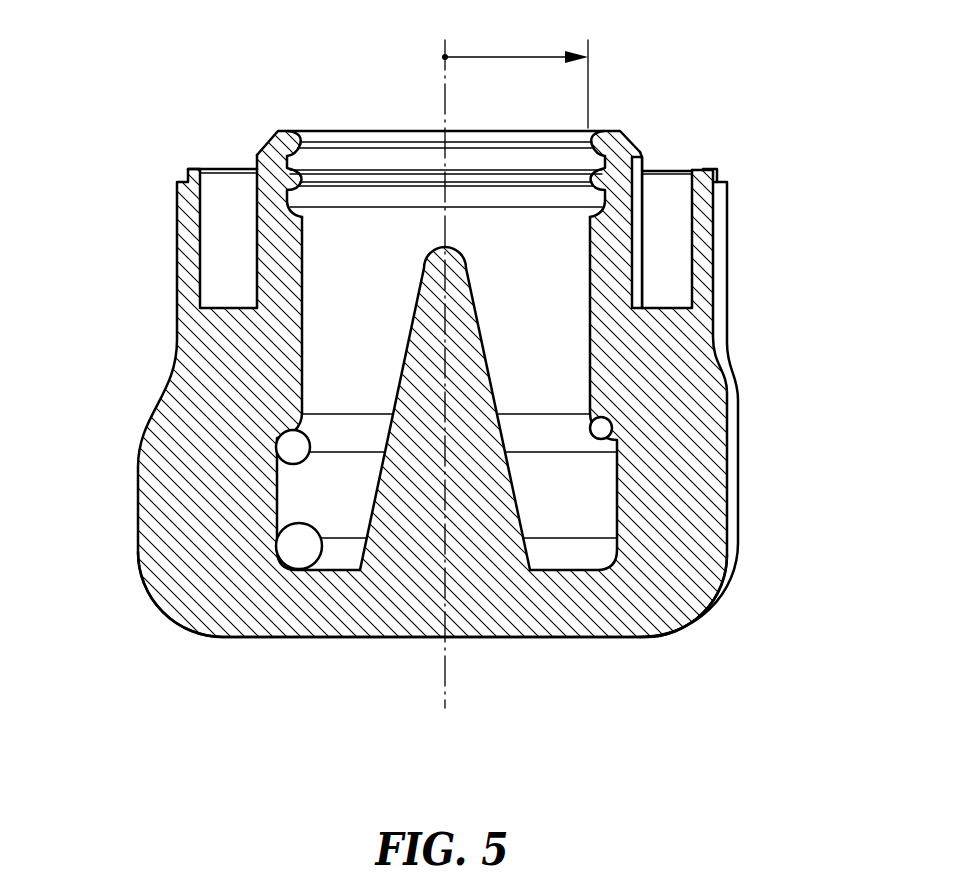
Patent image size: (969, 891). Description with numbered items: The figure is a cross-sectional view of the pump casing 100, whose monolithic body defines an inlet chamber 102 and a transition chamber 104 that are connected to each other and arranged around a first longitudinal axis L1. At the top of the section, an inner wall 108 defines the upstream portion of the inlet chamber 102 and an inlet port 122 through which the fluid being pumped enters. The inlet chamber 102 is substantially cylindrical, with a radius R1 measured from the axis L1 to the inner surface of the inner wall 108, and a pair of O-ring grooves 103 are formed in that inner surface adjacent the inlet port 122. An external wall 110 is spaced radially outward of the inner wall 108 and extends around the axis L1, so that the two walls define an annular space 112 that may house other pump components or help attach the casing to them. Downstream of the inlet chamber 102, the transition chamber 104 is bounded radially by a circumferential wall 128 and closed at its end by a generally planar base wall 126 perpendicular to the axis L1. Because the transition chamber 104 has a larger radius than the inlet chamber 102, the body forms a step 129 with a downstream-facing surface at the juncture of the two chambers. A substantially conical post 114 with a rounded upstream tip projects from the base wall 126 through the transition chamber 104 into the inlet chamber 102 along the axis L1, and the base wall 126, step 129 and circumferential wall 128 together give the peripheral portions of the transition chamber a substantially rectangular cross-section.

The pump casing 100 is at (182, 64).
The inlet chamber 102 is at (547, 350).
The O-ring grooves 103 is at (338, 200).
The transition chamber 104 is at (570, 493).
The inner wall 108 is at (617, 163).
The external wall 110 is at (705, 220).
The annular space 112 is at (667, 193).
The post 114 is at (433, 333).
The inlet port 122 is at (413, 130).
The base wall 126 is at (318, 541).
The wall 128 is at (693, 565).
The step 129 is at (287, 466).
The radius R1 is at (515, 365).
The first longitudinal axis L1 is at (445, 688).